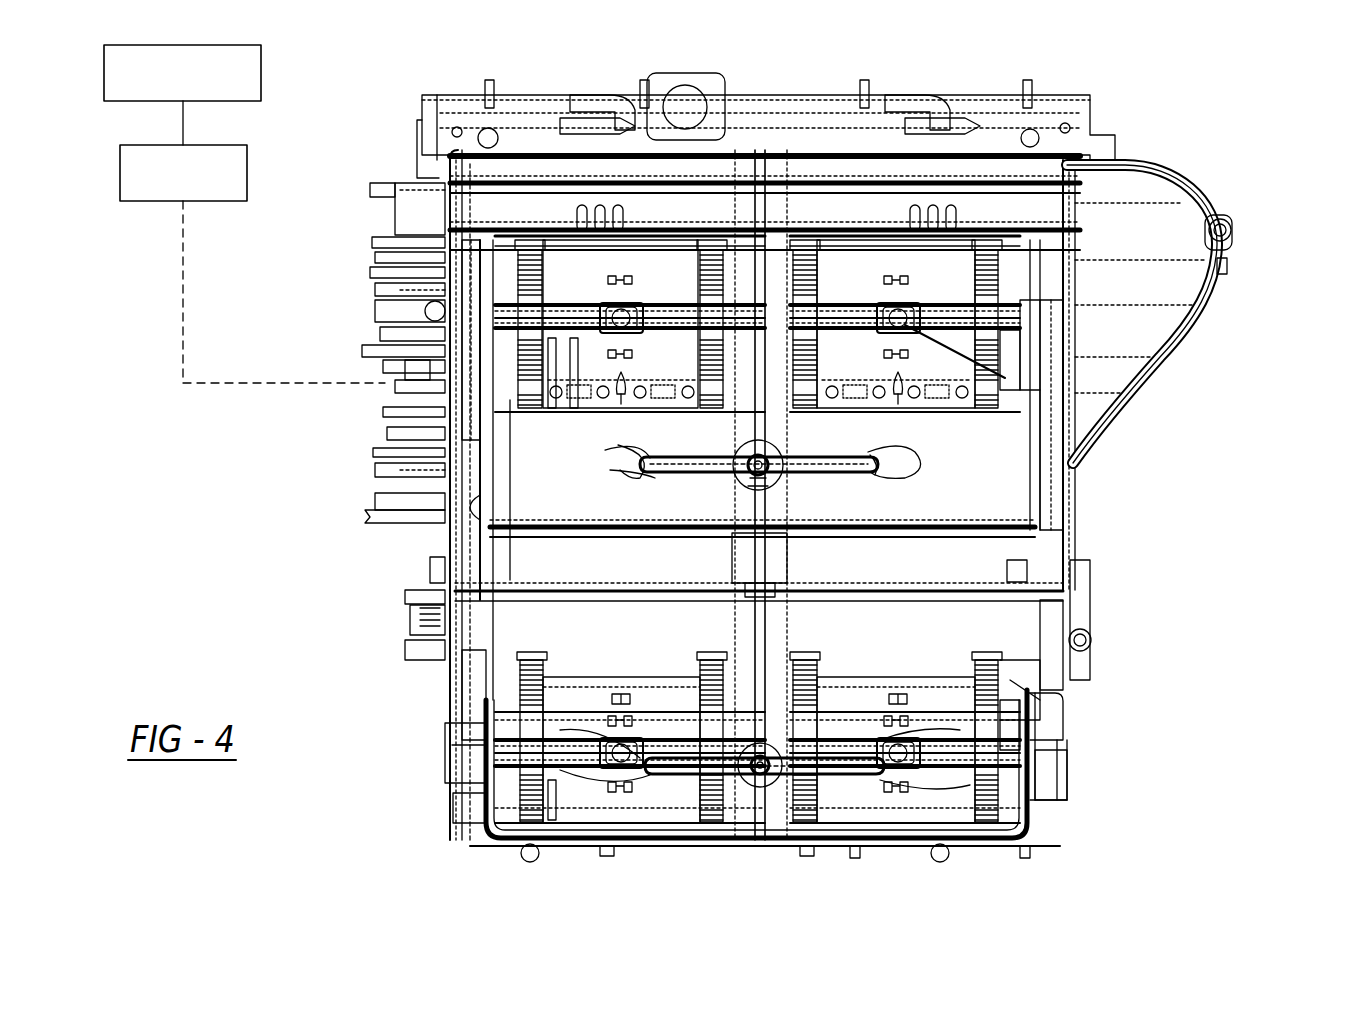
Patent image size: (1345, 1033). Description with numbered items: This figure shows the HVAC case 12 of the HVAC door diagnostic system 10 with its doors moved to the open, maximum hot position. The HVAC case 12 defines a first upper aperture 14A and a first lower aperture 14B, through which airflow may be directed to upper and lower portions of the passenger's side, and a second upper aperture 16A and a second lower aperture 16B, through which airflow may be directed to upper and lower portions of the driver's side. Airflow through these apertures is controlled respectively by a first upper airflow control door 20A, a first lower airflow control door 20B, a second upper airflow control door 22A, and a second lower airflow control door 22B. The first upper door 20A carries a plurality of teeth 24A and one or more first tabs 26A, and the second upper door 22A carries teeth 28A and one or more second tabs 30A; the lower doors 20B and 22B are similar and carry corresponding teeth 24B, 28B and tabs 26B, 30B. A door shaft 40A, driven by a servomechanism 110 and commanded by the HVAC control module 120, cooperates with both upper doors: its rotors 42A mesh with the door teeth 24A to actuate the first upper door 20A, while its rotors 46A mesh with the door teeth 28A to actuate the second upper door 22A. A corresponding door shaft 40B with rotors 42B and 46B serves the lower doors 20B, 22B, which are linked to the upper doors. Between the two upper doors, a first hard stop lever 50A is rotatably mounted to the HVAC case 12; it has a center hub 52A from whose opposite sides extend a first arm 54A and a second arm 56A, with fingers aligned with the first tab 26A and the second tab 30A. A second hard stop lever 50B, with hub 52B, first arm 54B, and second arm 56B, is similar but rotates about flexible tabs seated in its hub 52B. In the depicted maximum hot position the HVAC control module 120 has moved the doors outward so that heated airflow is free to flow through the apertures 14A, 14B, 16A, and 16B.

The HVAC door diagnostic system 10 is at (1214, 91).
The HVAC case 12 is at (793, 93).
The first upper aperture 14A is at (538, 490).
The first lower aperture 14B is at (550, 620).
The second upper aperture 16A is at (1010, 470).
The second lower aperture 16B is at (1010, 640).
The first upper airflow control door 20A is at (525, 470).
The first lower airflow control door 20B is at (570, 786).
The second upper airflow control door 22A is at (1050, 378).
The second lower airflow control door 22B is at (862, 795).
The teeth 24A is at (528, 245).
The teeth 24B is at (520, 780).
The first tabs 26A is at (628, 322).
The first tabs 26B is at (665, 740).
The teeth 28A is at (812, 245).
The teeth 28B is at (987, 790).
The second tabs 30A is at (862, 318).
The second tabs 30B is at (862, 745).
The door shaft 40A is at (425, 378).
The door shaft 40B is at (600, 695).
The rotors 42A is at (550, 432).
The rotors 42B is at (532, 660).
The rotors 46A is at (812, 410).
The rotors 46B is at (808, 660).
The first hard stop lever 50A is at (668, 480).
The second hard stop lever 50B is at (750, 800).
The center hub 52A is at (775, 478).
The hub 52B is at (760, 790).
The first arm 54A is at (665, 468).
The first arm 54B is at (682, 785).
The second arm 56A is at (868, 470).
The second arm 56B is at (870, 795).
The servomechanism 110 is at (247, 168).
The HVAC control module 120 is at (261, 57).